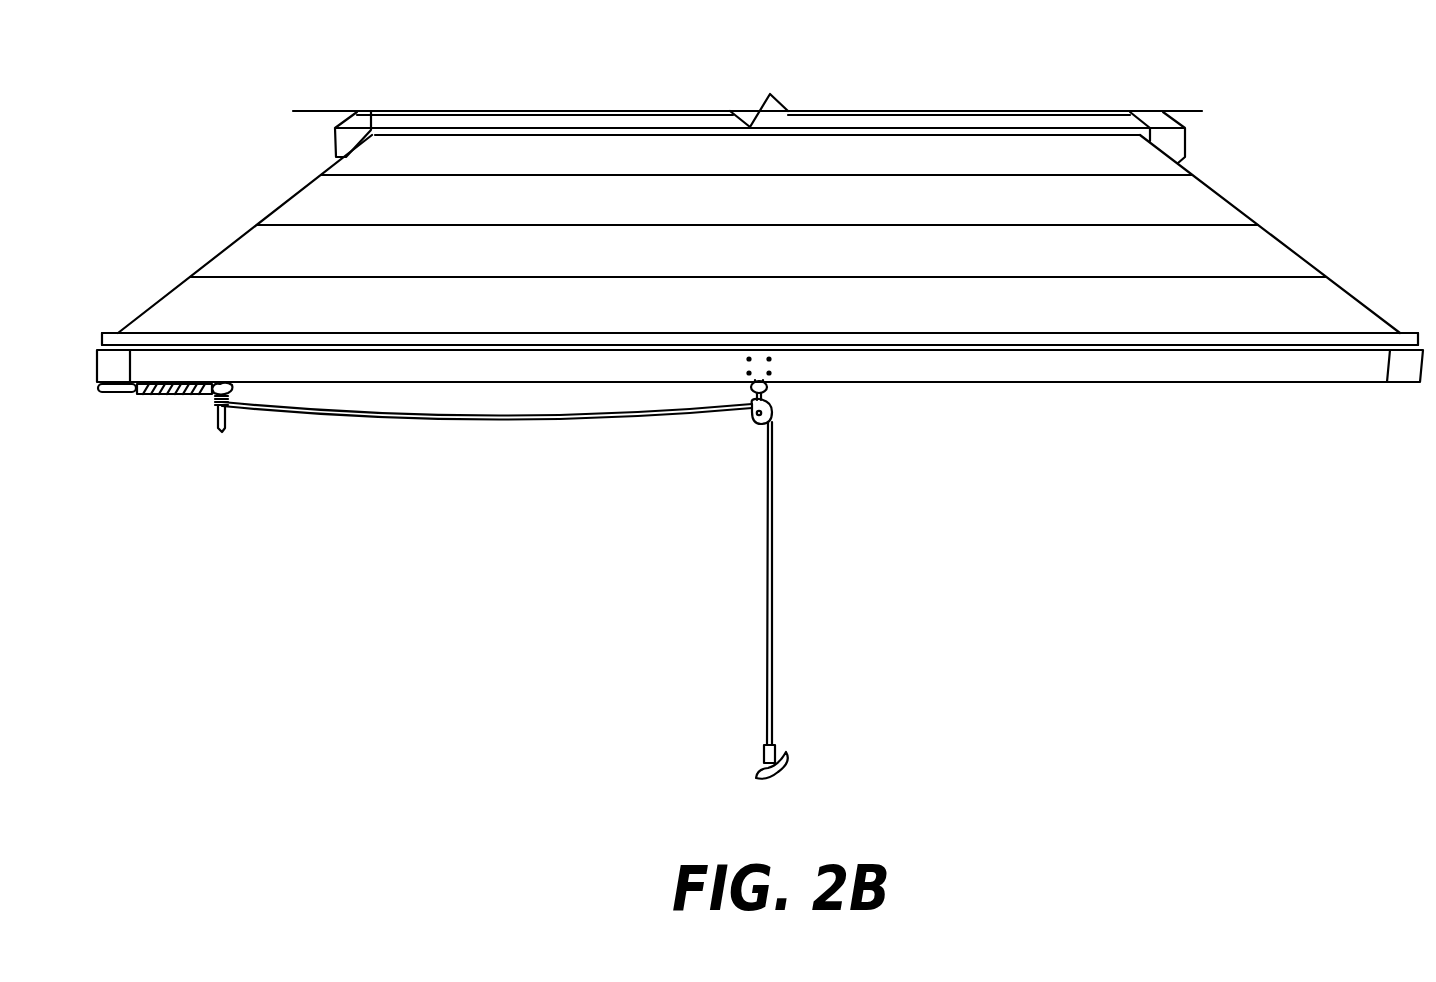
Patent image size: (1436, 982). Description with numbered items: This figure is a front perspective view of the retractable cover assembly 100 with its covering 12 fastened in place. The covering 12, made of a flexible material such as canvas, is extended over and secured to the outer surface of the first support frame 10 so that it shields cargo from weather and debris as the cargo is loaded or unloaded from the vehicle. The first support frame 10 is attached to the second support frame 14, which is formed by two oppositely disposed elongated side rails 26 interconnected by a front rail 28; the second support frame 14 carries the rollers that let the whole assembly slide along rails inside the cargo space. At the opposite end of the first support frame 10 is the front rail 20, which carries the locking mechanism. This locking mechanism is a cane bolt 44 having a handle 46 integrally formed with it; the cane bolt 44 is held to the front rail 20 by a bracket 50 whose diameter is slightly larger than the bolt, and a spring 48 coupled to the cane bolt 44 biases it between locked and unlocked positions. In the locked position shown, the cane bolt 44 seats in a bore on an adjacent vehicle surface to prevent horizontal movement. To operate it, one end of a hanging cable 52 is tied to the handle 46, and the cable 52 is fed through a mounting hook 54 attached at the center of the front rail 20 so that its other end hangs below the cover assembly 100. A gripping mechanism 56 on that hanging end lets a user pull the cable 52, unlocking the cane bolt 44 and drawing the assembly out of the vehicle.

The retractable cover assembly 100 is at (344, 64).
The first support frame 10 is at (755, 234).
The covering 12 is at (1193, 201).
The second support frame 14 is at (682, 96).
The side rails 26 is at (368, 118).
The front rail 28 is at (955, 120).
The front rail 20 is at (1048, 366).
The cane bolt 44 is at (150, 394).
The handle 46 is at (225, 432).
The spring 48 is at (185, 394).
The bracket 50 is at (135, 394).
The hanging cable 52 is at (484, 419).
The mounting hook 54 is at (750, 424).
The gripping mechanism 56 is at (790, 770).